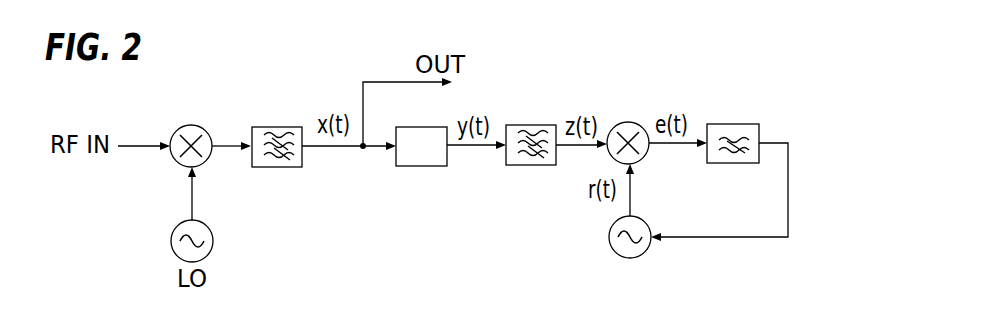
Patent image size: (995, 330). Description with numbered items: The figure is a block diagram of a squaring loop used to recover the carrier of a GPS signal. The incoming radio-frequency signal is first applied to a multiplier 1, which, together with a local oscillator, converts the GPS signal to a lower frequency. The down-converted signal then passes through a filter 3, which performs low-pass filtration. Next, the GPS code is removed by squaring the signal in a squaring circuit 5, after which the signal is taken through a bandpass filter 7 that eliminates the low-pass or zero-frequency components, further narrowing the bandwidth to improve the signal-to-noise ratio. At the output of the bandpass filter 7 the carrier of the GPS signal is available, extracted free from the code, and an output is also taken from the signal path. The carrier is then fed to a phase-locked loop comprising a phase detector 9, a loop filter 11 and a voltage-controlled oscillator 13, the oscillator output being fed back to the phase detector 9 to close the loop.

The multiplier 1 is at (189, 126).
The filter 3 is at (251, 131).
The squaring circuit 5 is at (417, 167).
The bandpass filter 7 is at (523, 166).
The phase detector 9 is at (624, 123).
The loop filter 11 is at (720, 164).
The voltage-controlled oscillator 13 is at (608, 236).